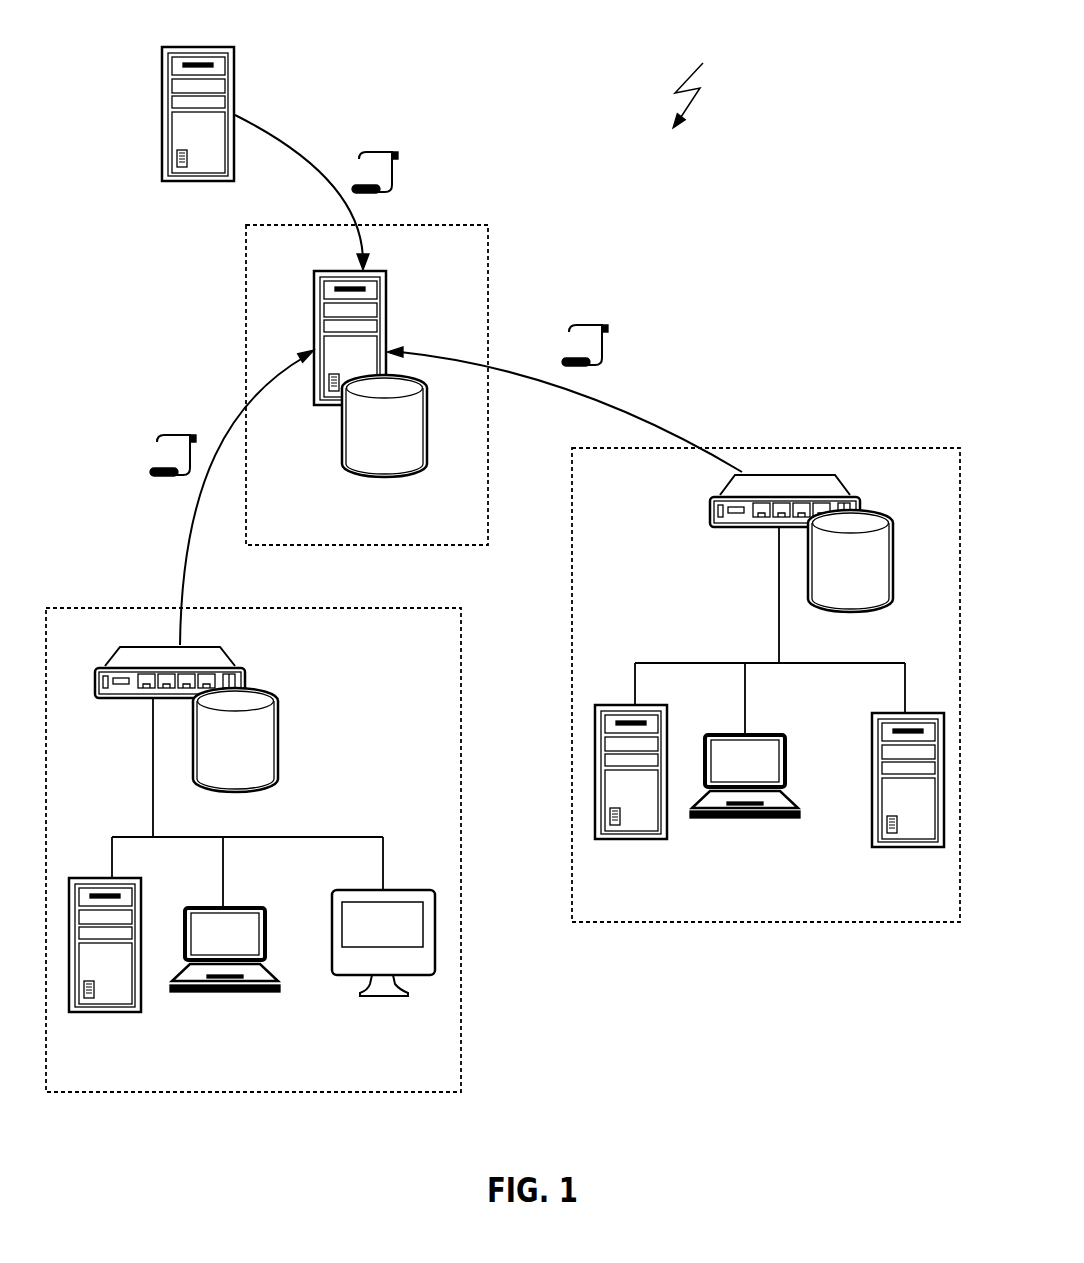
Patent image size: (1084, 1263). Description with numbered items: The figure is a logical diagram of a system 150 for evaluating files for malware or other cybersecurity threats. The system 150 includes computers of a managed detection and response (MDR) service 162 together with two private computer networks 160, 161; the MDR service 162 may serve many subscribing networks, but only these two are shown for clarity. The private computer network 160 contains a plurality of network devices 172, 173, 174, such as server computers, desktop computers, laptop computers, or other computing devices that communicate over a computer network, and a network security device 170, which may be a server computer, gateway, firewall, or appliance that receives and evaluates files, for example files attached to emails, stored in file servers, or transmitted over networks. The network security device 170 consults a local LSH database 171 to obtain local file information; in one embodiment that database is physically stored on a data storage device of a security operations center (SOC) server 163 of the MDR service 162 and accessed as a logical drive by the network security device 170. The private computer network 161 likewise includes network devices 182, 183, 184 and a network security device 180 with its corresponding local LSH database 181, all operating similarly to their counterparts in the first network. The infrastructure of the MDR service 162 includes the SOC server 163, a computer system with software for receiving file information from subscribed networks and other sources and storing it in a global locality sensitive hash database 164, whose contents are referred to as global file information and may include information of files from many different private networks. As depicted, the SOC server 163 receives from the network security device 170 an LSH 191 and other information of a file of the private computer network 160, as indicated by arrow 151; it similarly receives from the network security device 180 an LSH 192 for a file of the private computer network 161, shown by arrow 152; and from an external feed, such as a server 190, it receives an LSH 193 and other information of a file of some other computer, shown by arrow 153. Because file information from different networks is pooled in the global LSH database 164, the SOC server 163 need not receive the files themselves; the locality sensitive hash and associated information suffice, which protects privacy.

The system 150 is at (696, 82).
The arrow 151 is at (622, 408).
The arrow 152 is at (186, 540).
The arrow 153 is at (303, 158).
The private computer network 160 is at (838, 448).
The private computer network 161 is at (108, 608).
The managed detection and response (MDR) service 162 is at (456, 224).
The security operations center (SOC) server 163 is at (388, 297).
The global locality sensitive hash (LSH) database 164 is at (341, 447).
The network security device 170 is at (710, 511).
The local LSH database 171 is at (893, 565).
The network device 172 is at (610, 840).
The network device 173 is at (745, 820).
The network device 174 is at (900, 849).
The network security device 180 is at (237, 658).
The local LSH database 181 is at (278, 766).
The network device 182 is at (100, 1016).
The network device 183 is at (222, 996).
The network device 184 is at (373, 997).
The server 190 is at (207, 46).
The LSH 191 is at (562, 333).
The LSH 192 is at (150, 447).
The LSH 193 is at (353, 157).